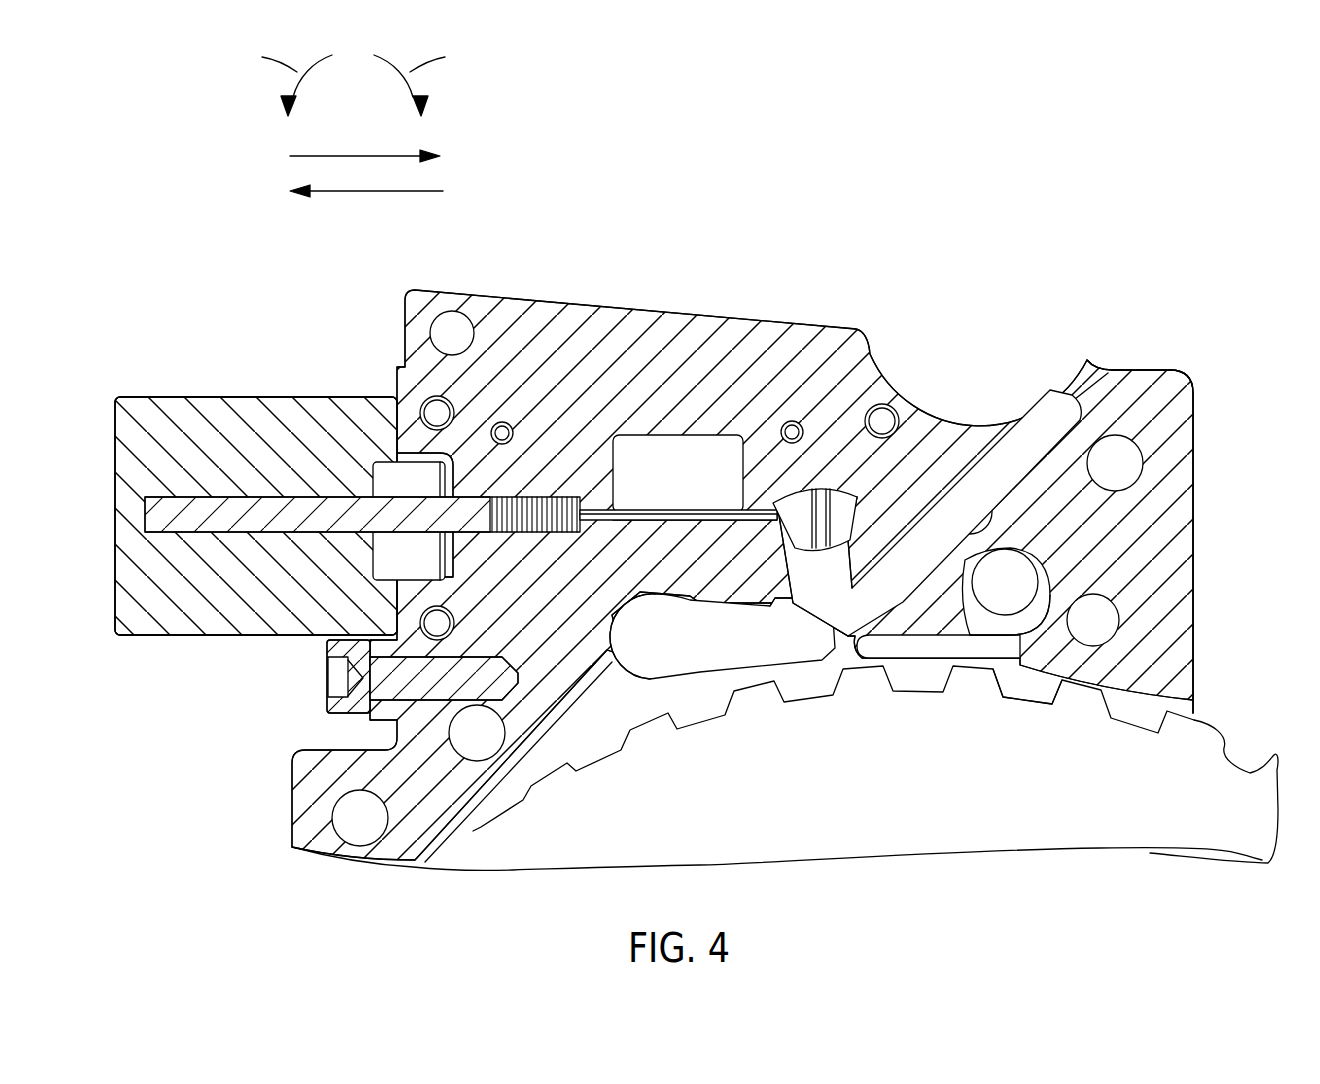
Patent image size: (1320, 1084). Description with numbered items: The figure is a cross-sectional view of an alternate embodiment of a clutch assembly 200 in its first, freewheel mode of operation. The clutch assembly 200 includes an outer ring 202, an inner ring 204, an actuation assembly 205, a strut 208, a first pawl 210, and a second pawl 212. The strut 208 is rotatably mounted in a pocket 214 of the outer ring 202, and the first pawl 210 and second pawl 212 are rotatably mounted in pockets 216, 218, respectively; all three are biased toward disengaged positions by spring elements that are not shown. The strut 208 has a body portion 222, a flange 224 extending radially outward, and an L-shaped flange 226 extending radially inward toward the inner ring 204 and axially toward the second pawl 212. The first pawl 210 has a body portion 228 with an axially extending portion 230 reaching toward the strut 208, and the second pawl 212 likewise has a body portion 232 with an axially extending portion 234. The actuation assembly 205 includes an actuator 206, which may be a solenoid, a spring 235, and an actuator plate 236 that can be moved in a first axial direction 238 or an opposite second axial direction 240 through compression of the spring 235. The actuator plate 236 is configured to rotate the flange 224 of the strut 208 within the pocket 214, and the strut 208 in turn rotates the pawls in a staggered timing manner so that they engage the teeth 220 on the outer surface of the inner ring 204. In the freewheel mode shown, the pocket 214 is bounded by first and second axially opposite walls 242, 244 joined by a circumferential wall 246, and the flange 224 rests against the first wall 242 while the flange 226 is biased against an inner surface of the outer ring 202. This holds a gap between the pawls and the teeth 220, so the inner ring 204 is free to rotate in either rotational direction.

The clutch assembly 200 is at (172, 132).
The outer ring 202 is at (687, 307).
The inner ring 204 is at (1193, 770).
The actuation assembly 205 is at (217, 380).
The actuator 206 is at (283, 396).
The strut 208 is at (1022, 422).
The first pawl 210 is at (625, 675).
The second pawl 212 is at (1047, 590).
The pocket 214 is at (822, 543).
The pocket 216 is at (613, 650).
The pocket 218 is at (1047, 583).
The teeth 220 is at (1210, 724).
The body portion 222 is at (950, 430).
The flange 224 is at (788, 510).
The flange 226 is at (1058, 408).
The body portion 228 is at (645, 660).
The axially extending portion 230 is at (757, 650).
The body portion 232 is at (1090, 540).
The axially extending portion 234 is at (1085, 648).
The spring 235 is at (553, 497).
The actuator plate 236 is at (642, 510).
The first axial direction 238 is at (400, 155).
The second axial direction 240 is at (372, 192).
The first wall 242 is at (757, 543).
The second wall 244 is at (850, 563).
The circumferential wall 246 is at (805, 497).